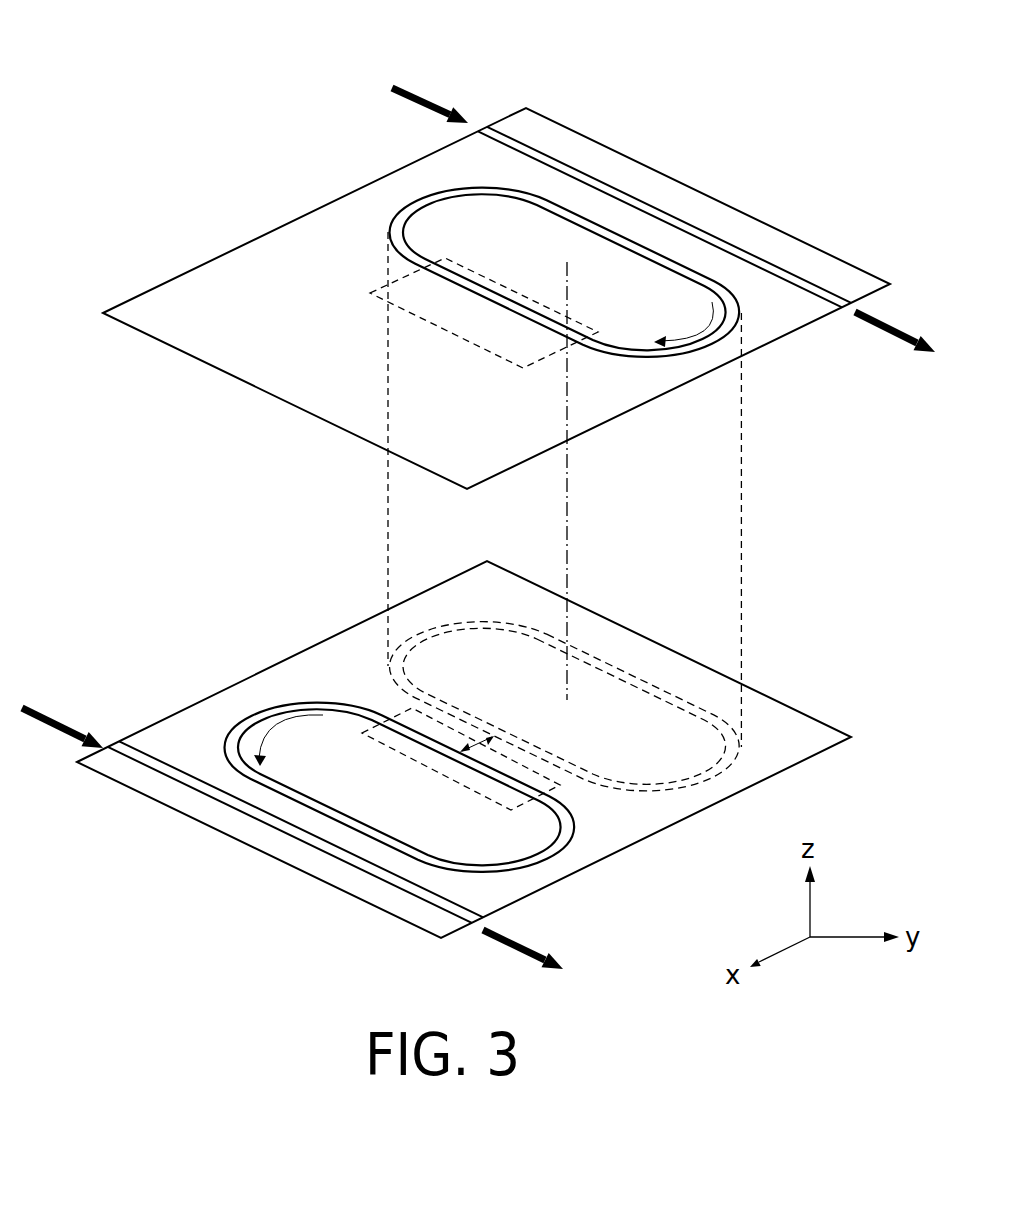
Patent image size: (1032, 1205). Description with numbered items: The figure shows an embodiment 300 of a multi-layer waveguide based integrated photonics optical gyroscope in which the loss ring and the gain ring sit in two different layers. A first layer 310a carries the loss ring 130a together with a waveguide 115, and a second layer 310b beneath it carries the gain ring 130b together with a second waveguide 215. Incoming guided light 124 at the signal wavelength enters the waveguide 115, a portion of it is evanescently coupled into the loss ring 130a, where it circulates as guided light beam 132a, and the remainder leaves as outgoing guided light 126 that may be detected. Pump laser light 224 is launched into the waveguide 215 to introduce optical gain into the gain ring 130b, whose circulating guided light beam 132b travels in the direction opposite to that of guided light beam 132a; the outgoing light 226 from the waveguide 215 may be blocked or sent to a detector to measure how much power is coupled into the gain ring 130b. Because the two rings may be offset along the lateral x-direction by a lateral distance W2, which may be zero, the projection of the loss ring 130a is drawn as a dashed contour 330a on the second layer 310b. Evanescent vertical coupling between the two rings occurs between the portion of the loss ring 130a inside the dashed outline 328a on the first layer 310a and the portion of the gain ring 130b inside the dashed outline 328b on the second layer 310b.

The embodiment 300 is at (231, 65).
The incoming guided light 124 is at (423, 98).
The outgoing guided light 126 is at (893, 333).
The waveguide 115 is at (586, 175).
The first layer 310a is at (813, 243).
The loss ring 130a is at (393, 216).
The guided light beam 132a is at (700, 336).
The dashed outline 328a is at (470, 340).
The pump laser light 224 is at (62, 708).
The outgoing light 226 is at (527, 945).
The waveguide 215 is at (158, 750).
The second layer 310b is at (775, 692).
The gain ring 130b is at (530, 855).
The guided light beam 132b is at (270, 724).
The dashed outline 328b is at (408, 755).
The dashed contour 330a is at (663, 698).
The lateral distance W2 is at (468, 745).